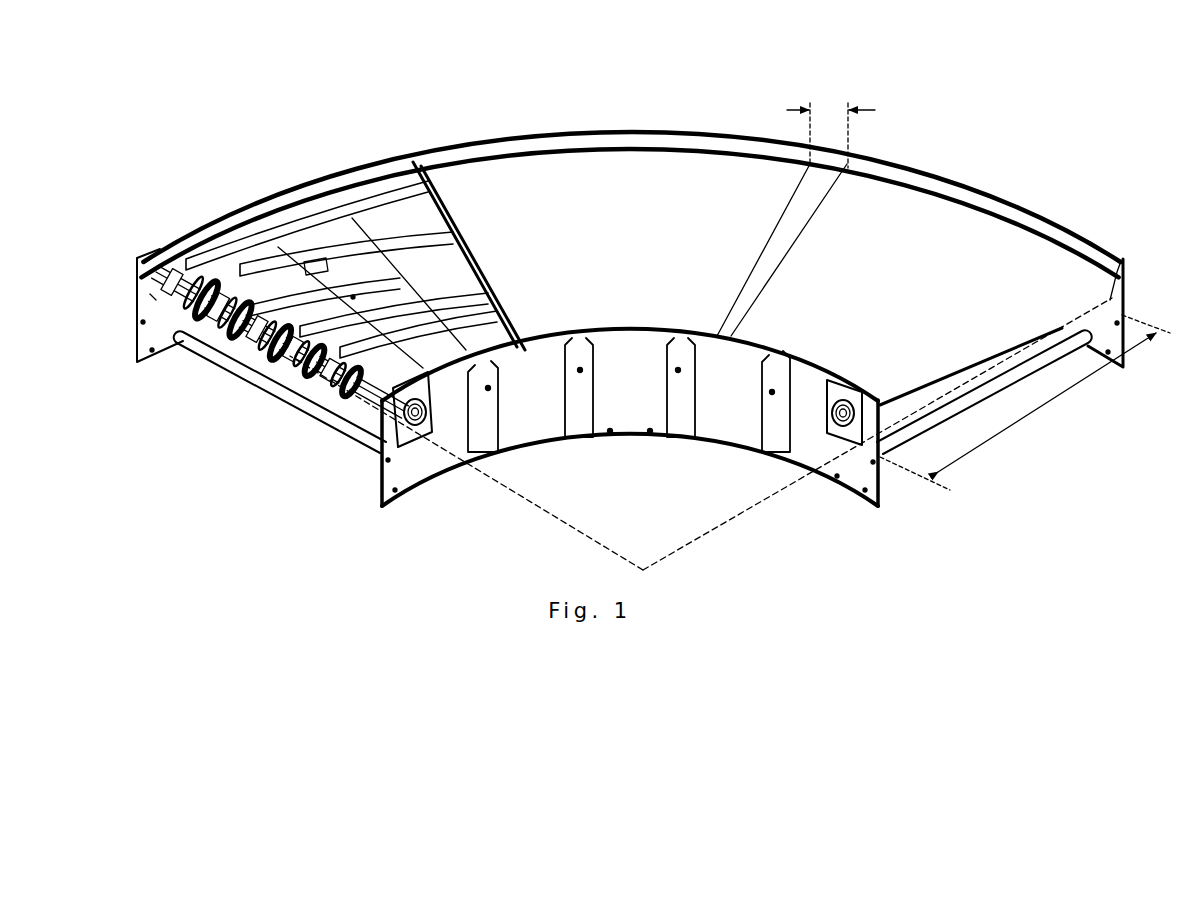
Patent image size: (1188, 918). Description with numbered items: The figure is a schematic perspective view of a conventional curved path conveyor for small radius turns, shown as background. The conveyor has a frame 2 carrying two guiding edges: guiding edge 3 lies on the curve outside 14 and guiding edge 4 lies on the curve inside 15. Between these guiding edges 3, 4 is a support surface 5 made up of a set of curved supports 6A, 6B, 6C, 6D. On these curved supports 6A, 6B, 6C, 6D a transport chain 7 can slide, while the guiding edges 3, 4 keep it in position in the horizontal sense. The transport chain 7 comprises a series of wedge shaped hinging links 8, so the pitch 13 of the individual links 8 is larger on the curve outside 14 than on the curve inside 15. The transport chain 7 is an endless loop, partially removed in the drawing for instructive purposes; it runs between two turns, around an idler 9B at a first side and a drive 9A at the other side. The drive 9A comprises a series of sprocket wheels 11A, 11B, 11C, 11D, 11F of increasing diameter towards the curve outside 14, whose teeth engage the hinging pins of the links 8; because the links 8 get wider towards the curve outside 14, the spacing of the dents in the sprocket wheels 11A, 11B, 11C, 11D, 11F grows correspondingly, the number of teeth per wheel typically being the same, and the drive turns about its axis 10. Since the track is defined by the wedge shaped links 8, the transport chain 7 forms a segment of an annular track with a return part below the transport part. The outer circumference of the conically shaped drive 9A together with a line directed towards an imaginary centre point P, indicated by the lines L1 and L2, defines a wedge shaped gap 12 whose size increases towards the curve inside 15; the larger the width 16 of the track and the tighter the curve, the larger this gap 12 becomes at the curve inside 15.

The frame 2 is at (656, 132).
The guiding edge 3 is at (1110, 276).
The guiding edge 4 is at (723, 437).
The support surface 5 is at (350, 188).
The curved support 6A is at (490, 334).
The curved support 6B is at (380, 326).
The curved support 6C is at (322, 270).
The curved support 6D is at (220, 243).
The transport chain 7 is at (538, 163).
The link 8 is at (776, 268).
The drive 9A is at (425, 420).
The idler 9B is at (834, 424).
The axis 10 is at (153, 283).
The sprocket wheel 11A is at (350, 400).
The sprocket wheel 11B is at (308, 380).
The sprocket wheel 11C is at (270, 362).
The sprocket wheel 11D is at (232, 342).
The sprocket wheel 11F is at (190, 323).
The wedge shaped gap 12 is at (938, 453).
The pitch 13 is at (831, 133).
The curve outside 14 is at (732, 121).
The curve inside 15 is at (619, 452).
The width 16 is at (1025, 418).
The line L1 is at (540, 510).
The line L2 is at (780, 493).
The centre point P is at (646, 584).